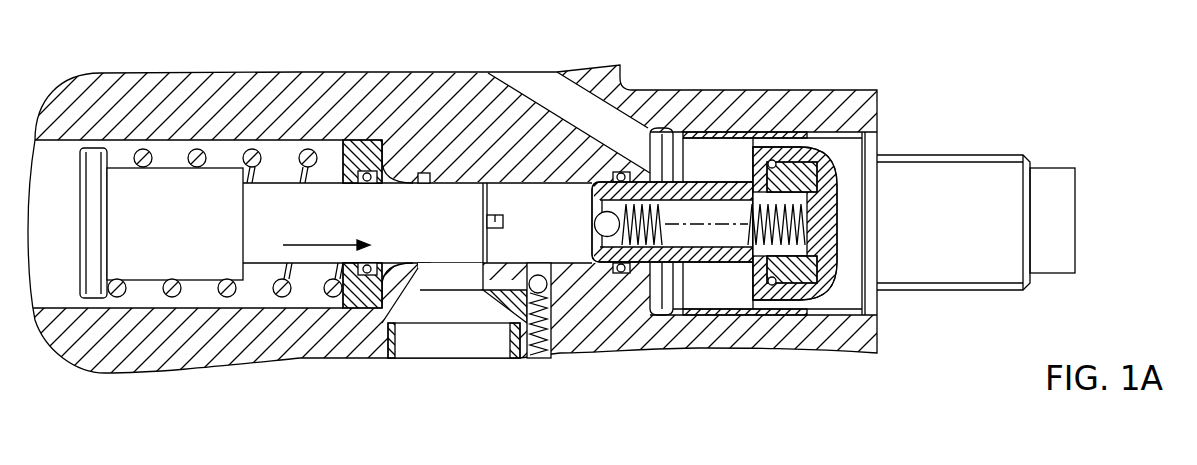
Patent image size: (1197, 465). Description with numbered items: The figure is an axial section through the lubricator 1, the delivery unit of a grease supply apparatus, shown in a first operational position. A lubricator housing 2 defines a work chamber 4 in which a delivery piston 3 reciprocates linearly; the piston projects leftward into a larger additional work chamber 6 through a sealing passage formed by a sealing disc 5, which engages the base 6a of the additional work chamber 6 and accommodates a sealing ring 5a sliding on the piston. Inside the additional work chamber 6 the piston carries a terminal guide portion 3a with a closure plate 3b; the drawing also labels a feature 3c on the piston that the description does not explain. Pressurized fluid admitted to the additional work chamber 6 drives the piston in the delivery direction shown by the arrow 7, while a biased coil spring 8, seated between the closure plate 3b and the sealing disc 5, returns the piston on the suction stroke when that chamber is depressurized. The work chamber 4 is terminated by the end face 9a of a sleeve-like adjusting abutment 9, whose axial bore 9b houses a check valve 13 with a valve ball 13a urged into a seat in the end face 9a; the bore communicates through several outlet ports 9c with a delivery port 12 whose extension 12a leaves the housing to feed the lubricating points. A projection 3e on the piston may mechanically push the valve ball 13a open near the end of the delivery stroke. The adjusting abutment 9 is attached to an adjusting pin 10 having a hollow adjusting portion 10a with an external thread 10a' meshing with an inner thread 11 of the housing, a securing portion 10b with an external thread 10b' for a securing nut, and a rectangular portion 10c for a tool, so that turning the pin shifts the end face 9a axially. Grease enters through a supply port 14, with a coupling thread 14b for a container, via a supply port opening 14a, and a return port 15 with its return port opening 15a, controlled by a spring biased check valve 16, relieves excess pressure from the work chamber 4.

The lubricator 1 is at (972, 345).
The lubricator housing 2 is at (193, 90).
The delivery piston 3 is at (440, 217).
The terminal guide portion 3a is at (118, 166).
The closure plate 3b is at (92, 292).
The rod joint 3c is at (483, 185).
The projection 3e is at (493, 228).
The work chamber 4 is at (543, 217).
The sealing disc 5 is at (365, 146).
The sealing ring 5a is at (368, 183).
The additional work chamber 6 is at (59, 194).
The base of the additional work chamber 6a is at (390, 162).
The arrow 7 is at (305, 245).
The coil spring 8 is at (253, 150).
The adjusting abutment 9 is at (708, 192).
The end face 9a is at (587, 203).
The axial bore 9b is at (722, 204).
The outlet ports 9c is at (748, 275).
The adjusting pin 10 is at (918, 140).
The hollow adjusting portion 10a is at (872, 265).
The external thread 10a' is at (773, 177).
The securing portion 10b is at (956, 199).
The external thread 10b' is at (950, 308).
The rectangular portion 10c is at (1048, 263).
The inner thread 11 is at (742, 204).
The delivery port 12 is at (712, 295).
The extension of the delivery port 12a is at (612, 117).
The check valve 13 is at (782, 250).
The valve ball 13a is at (604, 232).
The supply port 14 is at (423, 313).
The supply port opening 14a is at (443, 282).
The coupling thread 14b is at (388, 303).
The return port 15 is at (495, 298).
The return port opening 15a is at (546, 284).
The check valve 16 is at (540, 342).